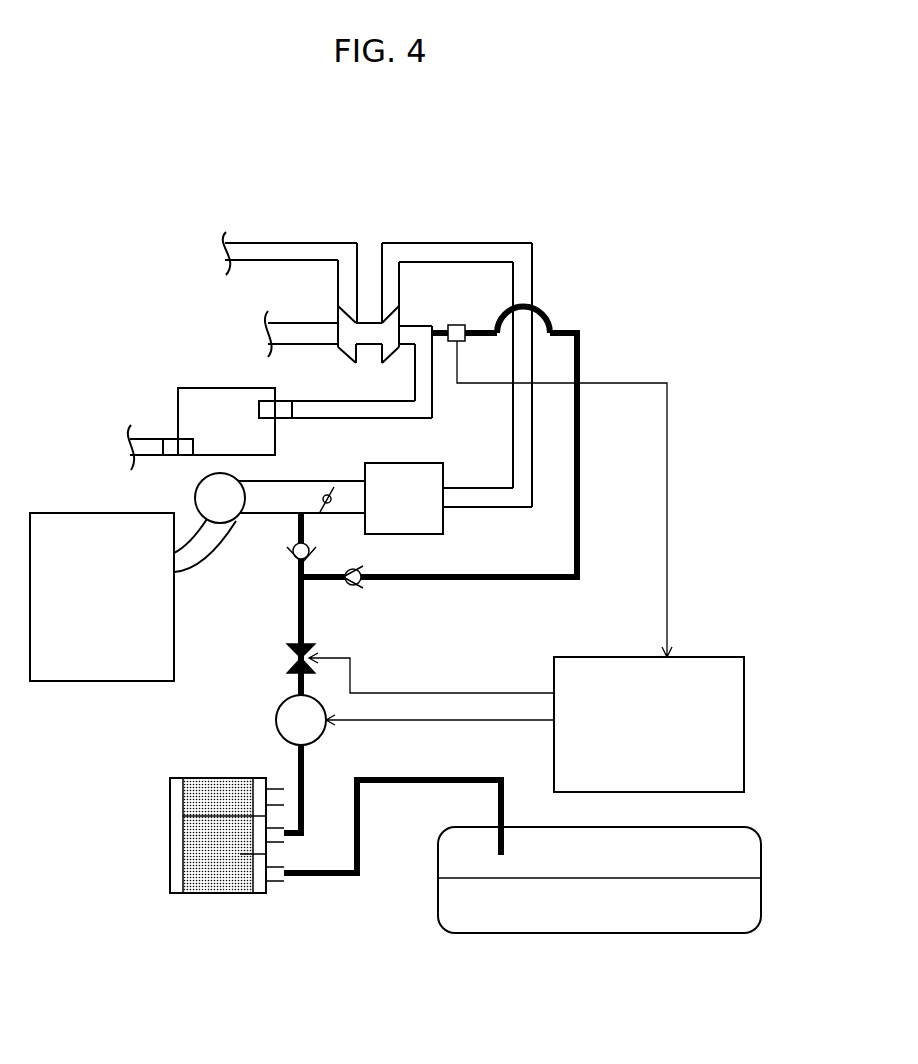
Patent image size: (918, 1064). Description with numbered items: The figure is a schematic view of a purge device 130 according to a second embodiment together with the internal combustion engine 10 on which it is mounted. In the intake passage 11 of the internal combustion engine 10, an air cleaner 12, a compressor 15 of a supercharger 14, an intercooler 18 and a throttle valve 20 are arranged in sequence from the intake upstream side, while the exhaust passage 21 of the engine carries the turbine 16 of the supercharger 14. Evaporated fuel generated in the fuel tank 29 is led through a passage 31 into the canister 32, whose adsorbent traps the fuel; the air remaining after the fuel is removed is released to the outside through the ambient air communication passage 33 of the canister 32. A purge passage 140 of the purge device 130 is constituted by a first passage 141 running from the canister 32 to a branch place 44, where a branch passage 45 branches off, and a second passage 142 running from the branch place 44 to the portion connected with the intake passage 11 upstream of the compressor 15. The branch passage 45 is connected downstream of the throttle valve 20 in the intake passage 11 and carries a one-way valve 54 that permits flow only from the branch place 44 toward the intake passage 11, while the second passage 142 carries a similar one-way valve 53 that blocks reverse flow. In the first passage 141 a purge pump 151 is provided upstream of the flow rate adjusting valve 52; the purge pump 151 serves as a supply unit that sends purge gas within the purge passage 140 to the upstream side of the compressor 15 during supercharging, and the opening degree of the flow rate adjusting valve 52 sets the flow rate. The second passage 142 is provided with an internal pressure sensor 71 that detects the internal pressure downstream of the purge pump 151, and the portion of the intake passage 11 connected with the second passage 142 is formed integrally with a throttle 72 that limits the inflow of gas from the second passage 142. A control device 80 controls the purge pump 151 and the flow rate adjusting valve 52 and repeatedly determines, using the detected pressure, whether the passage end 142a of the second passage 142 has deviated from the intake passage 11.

The internal combustion engine 10 is at (89, 423).
The intake passage 11 is at (433, 401).
The air cleaner 12 is at (200, 388).
The supercharger 14 is at (385, 311).
The compressor 15 is at (399, 305).
The turbine 16 is at (338, 306).
The intercooler 18 is at (410, 463).
The throttle valve 20 is at (333, 487).
The exhaust passage 21 is at (285, 322).
The fuel tank 29 is at (762, 868).
The passage 31 is at (428, 778).
The canister 32 is at (170, 832).
The ambient air communication passage 33 is at (276, 787).
The branch place 44 is at (306, 581).
The branch passage 45 is at (298, 525).
The flow rate adjusting valve 52 is at (315, 646).
The one-way valve 53 is at (362, 583).
The one-way valve 54 is at (290, 553).
The internal pressure sensor 71 is at (465, 341).
The throttle 72 is at (431, 336).
The control device 80 is at (746, 722).
The purge device 130 is at (138, 735).
The purge passage 140 is at (393, 625).
The first passage 141 is at (298, 596).
The second passage 142 is at (488, 581).
The passage end 142a is at (452, 325).
The purge pump 151 is at (276, 718).